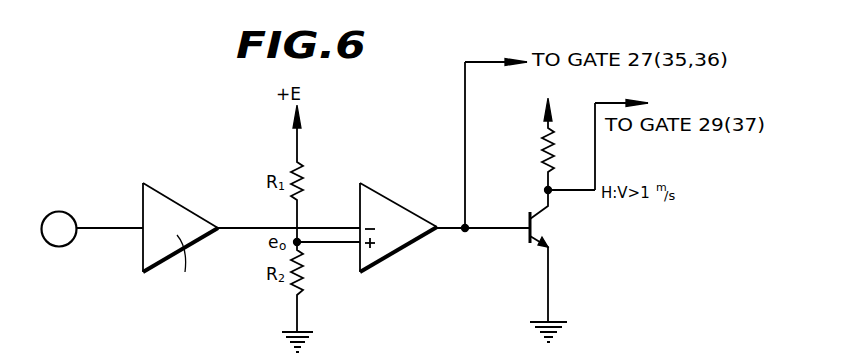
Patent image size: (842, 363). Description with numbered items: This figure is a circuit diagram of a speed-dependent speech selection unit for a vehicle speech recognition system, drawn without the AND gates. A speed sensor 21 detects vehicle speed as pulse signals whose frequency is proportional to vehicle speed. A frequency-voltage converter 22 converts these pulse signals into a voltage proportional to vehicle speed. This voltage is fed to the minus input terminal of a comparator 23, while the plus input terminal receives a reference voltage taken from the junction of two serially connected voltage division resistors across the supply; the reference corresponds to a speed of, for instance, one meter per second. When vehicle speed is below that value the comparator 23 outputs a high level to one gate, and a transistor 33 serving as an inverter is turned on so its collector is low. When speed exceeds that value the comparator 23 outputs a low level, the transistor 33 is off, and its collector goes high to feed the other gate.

The speed sensor 21 is at (59, 211).
The frequency-voltage converter 22 is at (155, 188).
The comparator 23 is at (402, 206).
The transistor 33 is at (528, 210).